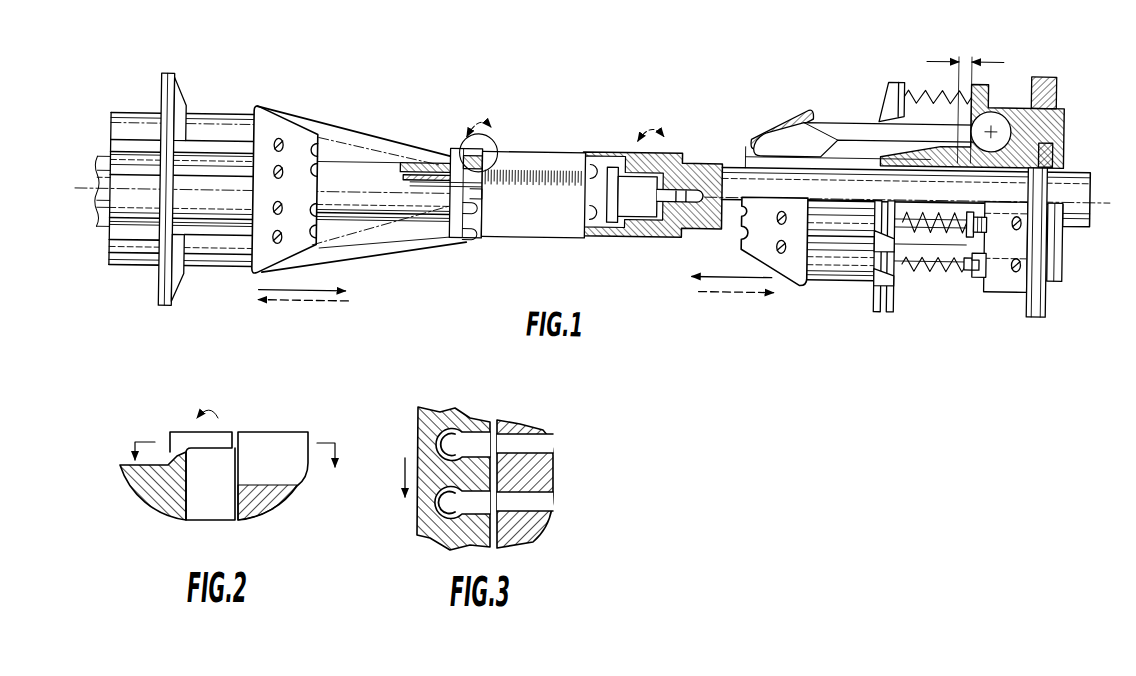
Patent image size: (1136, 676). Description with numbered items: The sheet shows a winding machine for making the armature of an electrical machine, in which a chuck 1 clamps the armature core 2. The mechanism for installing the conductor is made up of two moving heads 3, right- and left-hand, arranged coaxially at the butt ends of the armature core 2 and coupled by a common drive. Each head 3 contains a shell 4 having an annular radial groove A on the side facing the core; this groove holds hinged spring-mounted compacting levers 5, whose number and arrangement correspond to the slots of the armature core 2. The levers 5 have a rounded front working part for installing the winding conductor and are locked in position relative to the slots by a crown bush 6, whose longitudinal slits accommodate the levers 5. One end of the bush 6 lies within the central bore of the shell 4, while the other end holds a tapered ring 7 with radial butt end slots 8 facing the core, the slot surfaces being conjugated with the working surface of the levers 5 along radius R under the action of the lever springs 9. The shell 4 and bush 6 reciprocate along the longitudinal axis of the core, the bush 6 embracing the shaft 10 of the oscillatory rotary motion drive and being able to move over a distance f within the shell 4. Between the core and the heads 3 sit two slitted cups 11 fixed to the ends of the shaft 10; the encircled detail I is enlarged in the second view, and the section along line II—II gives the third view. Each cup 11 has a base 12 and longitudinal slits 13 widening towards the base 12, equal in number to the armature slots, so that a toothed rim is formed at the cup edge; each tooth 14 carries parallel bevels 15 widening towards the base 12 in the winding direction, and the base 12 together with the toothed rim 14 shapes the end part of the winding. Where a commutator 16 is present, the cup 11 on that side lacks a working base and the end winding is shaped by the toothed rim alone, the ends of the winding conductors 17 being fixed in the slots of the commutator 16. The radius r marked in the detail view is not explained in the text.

In FIG. 1, the chuck 1 is at (482, 188).
In FIG. 1, the armature core 2 is at (553, 164).
In FIG. 2, the armature core 2 is at (267, 499).
In FIG. 3, the armature core 2 is at (520, 524).
In FIG. 1, the moving head 3 is at (208, 212).
In FIG. 1, the shell 4 is at (1063, 116).
In FIG. 1, the compacting lever 5 is at (828, 112).
In FIG. 1, the crown bush 6 is at (1052, 152).
In FIG. 1, the tapered ring 7 is at (778, 113).
In FIG. 1, the radial butt end slot 8 is at (323, 228).
In FIG. 1, the lever spring 9 is at (920, 231).
In FIG. 1, the shaft 10 is at (100, 170).
In FIG. 1, the slitted cup 11 is at (440, 157).
In FIG. 2, the slitted cup 11 is at (155, 504).
In FIG. 3, the slitted cup 11 is at (430, 408).
In FIG. 2, the base 12 is at (190, 518).
In FIG. 2, the longitudinal slit 13 is at (178, 433).
In FIG. 3, the longitudinal slit 13 is at (450, 440).
In FIG. 3, the tooth 14 is at (460, 536).
In FIG. 3, the bevel 15 is at (437, 460).
In FIG. 1, the commutator 16 is at (612, 160).
In FIG. 1, the winding conductor 17 is at (345, 126).
In FIG. 1, the annular radial groove A is at (990, 98).
In FIG. 1, the radius R is at (745, 137).
In FIG. 1, the part I of the drawing I is at (493, 129).
In FIG. 1, the distance f is at (964, 93).
In FIG. 2, the fillet radius r is at (192, 454).
In FIG. 2, the section line II— II is at (234, 451).